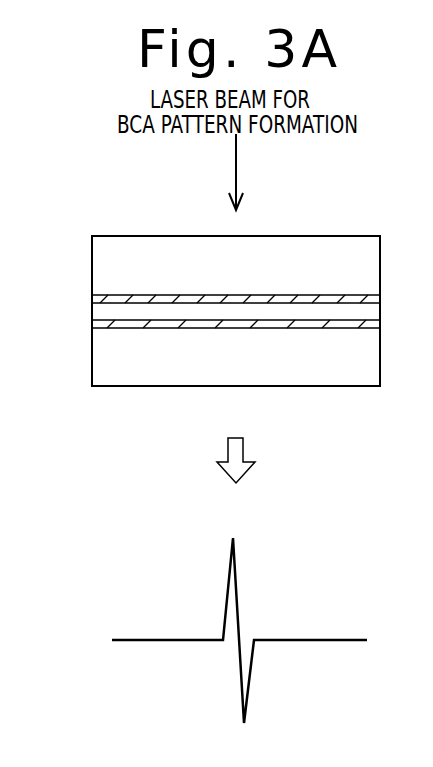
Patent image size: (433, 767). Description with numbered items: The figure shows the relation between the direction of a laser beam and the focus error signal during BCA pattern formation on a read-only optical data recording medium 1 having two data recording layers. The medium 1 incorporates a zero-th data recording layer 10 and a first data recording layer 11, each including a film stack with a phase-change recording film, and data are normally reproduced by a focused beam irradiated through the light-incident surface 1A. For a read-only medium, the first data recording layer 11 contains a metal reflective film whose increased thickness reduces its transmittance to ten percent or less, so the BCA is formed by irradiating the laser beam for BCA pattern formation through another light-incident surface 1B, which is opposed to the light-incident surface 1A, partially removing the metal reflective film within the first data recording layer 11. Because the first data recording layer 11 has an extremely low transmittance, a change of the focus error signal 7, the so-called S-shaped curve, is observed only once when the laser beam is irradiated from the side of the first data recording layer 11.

The optical data recording medium 1 is at (199, 293).
The light-incident surface 1A is at (143, 387).
The another light-incident surface 1B is at (329, 236).
The zero-th data recording layer 10 is at (95, 323).
The first data recording layer 11 is at (95, 299).
The focus error signal 7 is at (239, 606).